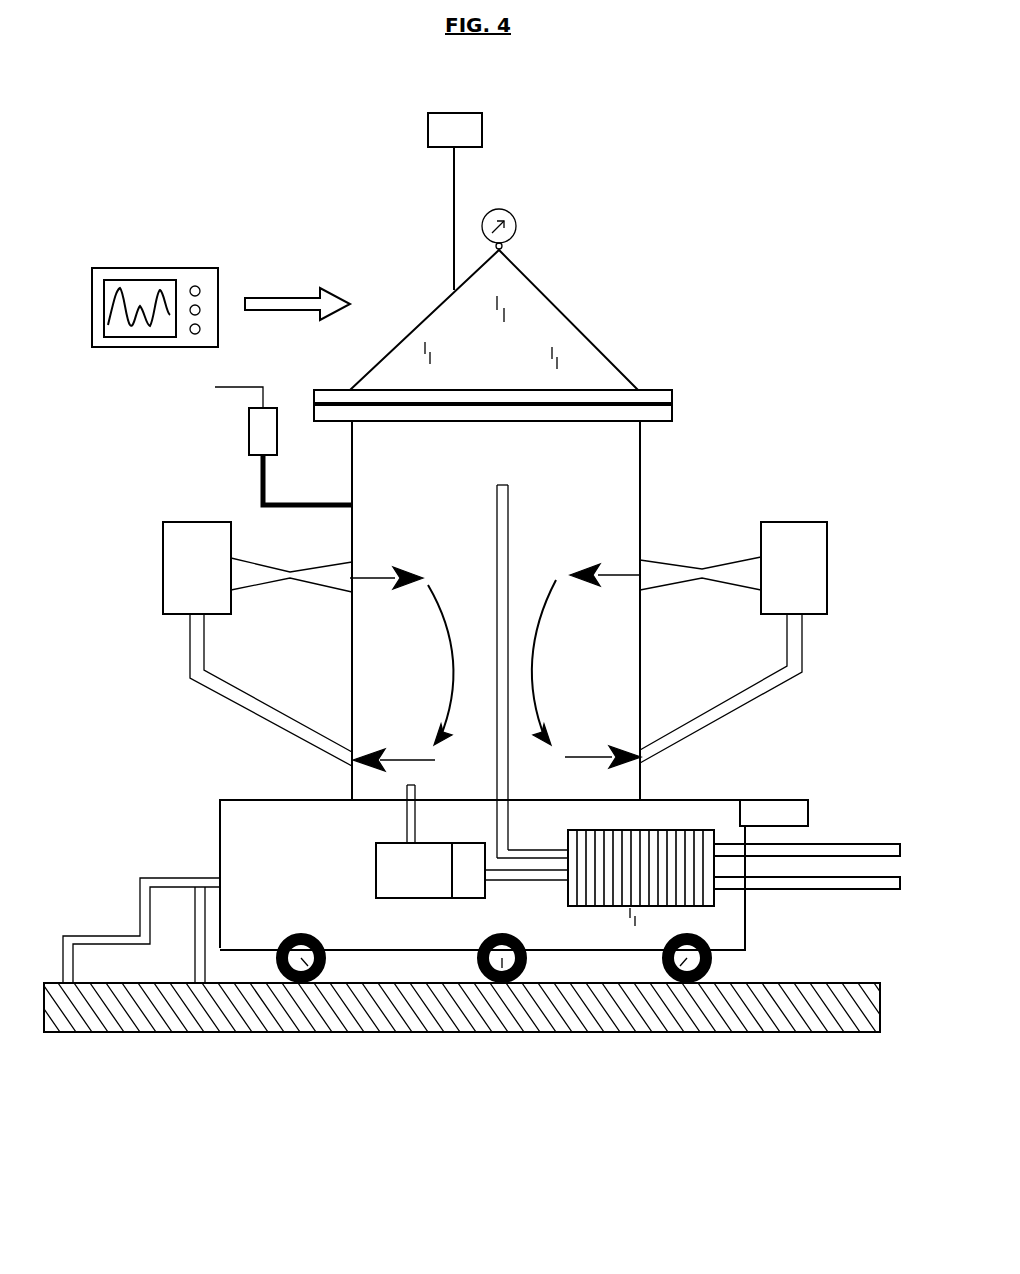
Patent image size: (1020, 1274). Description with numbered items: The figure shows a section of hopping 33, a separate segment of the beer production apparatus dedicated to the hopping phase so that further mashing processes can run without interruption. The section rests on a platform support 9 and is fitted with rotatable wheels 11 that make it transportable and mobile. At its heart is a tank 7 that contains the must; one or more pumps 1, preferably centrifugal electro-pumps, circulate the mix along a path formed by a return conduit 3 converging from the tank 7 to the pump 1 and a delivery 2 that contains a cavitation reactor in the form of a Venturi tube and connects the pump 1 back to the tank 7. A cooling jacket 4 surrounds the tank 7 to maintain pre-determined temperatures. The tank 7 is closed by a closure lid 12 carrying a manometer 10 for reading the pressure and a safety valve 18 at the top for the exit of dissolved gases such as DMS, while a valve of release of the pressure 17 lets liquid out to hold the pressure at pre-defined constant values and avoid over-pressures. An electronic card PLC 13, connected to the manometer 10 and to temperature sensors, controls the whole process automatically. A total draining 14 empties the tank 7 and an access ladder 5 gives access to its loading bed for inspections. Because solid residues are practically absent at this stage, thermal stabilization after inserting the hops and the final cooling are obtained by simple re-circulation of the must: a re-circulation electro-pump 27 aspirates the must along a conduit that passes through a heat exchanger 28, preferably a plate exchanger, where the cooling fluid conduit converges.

The pump 1 is at (495, 568).
The delivery with cavitation reactor 2 is at (253, 578).
The return conduit 3 is at (768, 688).
The cooling jacket 4 is at (338, 772).
The access ladder 5 is at (97, 936).
The tank 7 is at (496, 610).
The platform support 9 is at (745, 1032).
The manometer 10 is at (518, 226).
The rotatable wheels 11 is at (672, 985).
The closure lid 12 is at (494, 320).
The electronic card PLC 13 is at (129, 268).
The total draining 14 is at (795, 814).
The pressure release valve 17 is at (262, 437).
The safety valve 18 is at (482, 124).
The re-circulation electro-pump 27 is at (472, 870).
The heat exchanger 28 is at (562, 898).
The section of hopping 33 is at (720, 200).